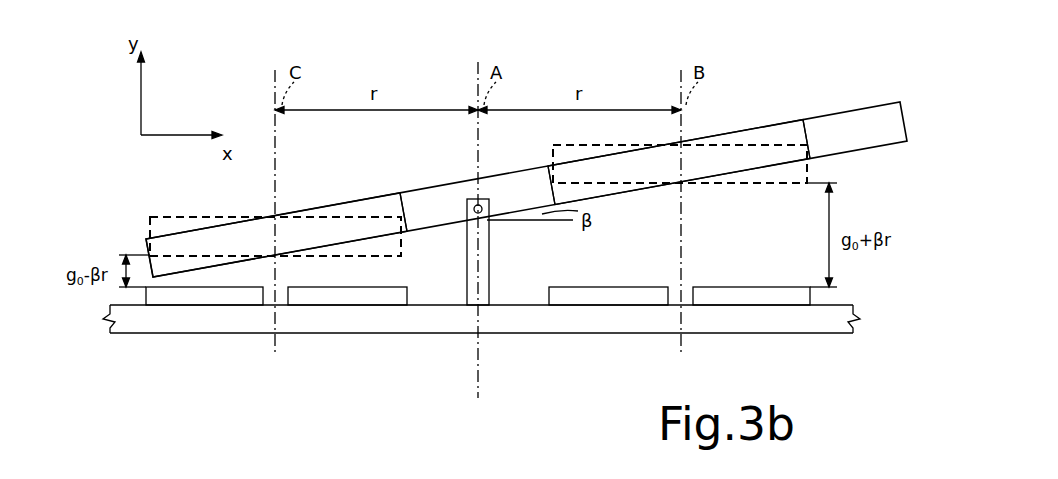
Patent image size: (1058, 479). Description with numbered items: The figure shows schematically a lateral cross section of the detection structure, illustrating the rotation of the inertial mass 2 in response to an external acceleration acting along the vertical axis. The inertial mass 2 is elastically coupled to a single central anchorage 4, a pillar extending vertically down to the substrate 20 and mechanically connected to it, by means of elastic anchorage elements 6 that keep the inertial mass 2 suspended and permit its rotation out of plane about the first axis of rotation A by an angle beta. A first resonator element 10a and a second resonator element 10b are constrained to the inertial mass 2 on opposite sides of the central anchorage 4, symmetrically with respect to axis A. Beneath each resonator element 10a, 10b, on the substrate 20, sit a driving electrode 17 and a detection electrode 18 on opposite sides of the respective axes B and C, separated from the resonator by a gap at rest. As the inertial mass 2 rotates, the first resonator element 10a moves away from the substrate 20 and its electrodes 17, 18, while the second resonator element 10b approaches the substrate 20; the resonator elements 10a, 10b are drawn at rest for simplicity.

The inertial mass 2 is at (526, 167).
The central anchorage 4 is at (483, 287).
The elastic anchorage elements 6 is at (481, 214).
The first resonator element 10a is at (755, 138).
The second resonator element 10b is at (358, 212).
The driving electrode 17 is at (190, 297).
The detection electrode 18 is at (368, 296).
The substrate 20 is at (828, 325).